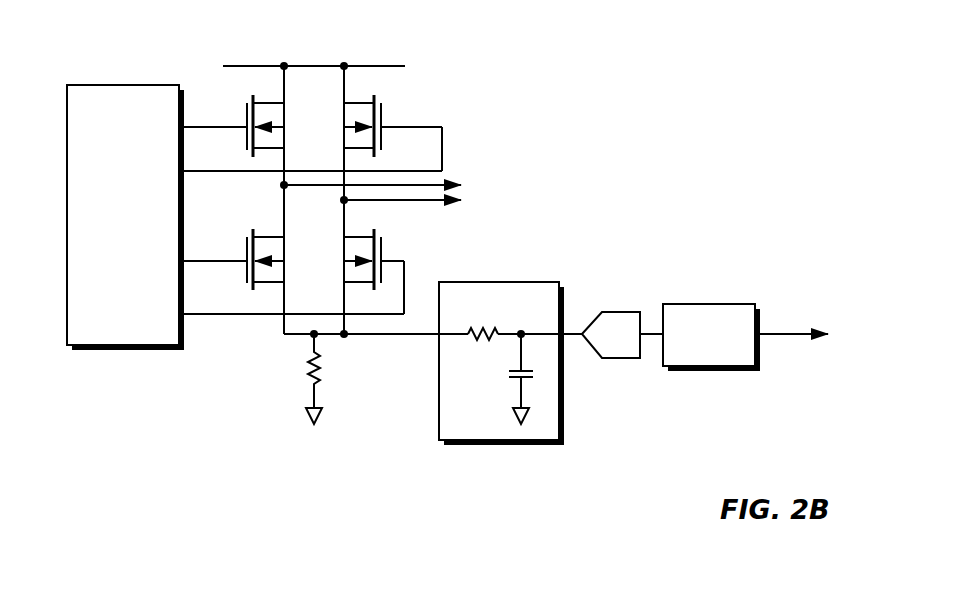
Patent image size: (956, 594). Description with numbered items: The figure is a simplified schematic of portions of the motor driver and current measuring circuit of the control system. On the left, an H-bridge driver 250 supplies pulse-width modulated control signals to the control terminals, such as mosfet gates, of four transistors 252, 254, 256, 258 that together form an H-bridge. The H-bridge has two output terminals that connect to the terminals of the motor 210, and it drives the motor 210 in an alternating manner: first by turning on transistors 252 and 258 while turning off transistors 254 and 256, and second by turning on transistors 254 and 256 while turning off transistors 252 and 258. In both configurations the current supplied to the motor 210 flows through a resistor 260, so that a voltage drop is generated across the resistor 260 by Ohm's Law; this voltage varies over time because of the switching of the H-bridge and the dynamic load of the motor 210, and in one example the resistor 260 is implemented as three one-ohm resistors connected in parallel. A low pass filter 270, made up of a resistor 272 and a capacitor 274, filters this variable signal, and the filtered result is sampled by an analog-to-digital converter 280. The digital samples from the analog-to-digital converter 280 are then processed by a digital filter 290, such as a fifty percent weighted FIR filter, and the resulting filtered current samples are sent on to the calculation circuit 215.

The motor 210 is at (526, 192).
The calculation circuit 215 is at (799, 380).
The H-bridge driver 250 is at (125, 217).
The transistor 252 is at (242, 118).
The transistor 254 is at (387, 118).
The transistor 256 is at (242, 251).
The transistor 258 is at (387, 252).
The resistor 260 is at (300, 369).
The low pass filter 270 is at (510, 363).
The resistor 272 is at (488, 344).
The capacitor 274 is at (507, 376).
The analog-to-digital converter 280 is at (611, 335).
The digital filter 290 is at (711, 337).